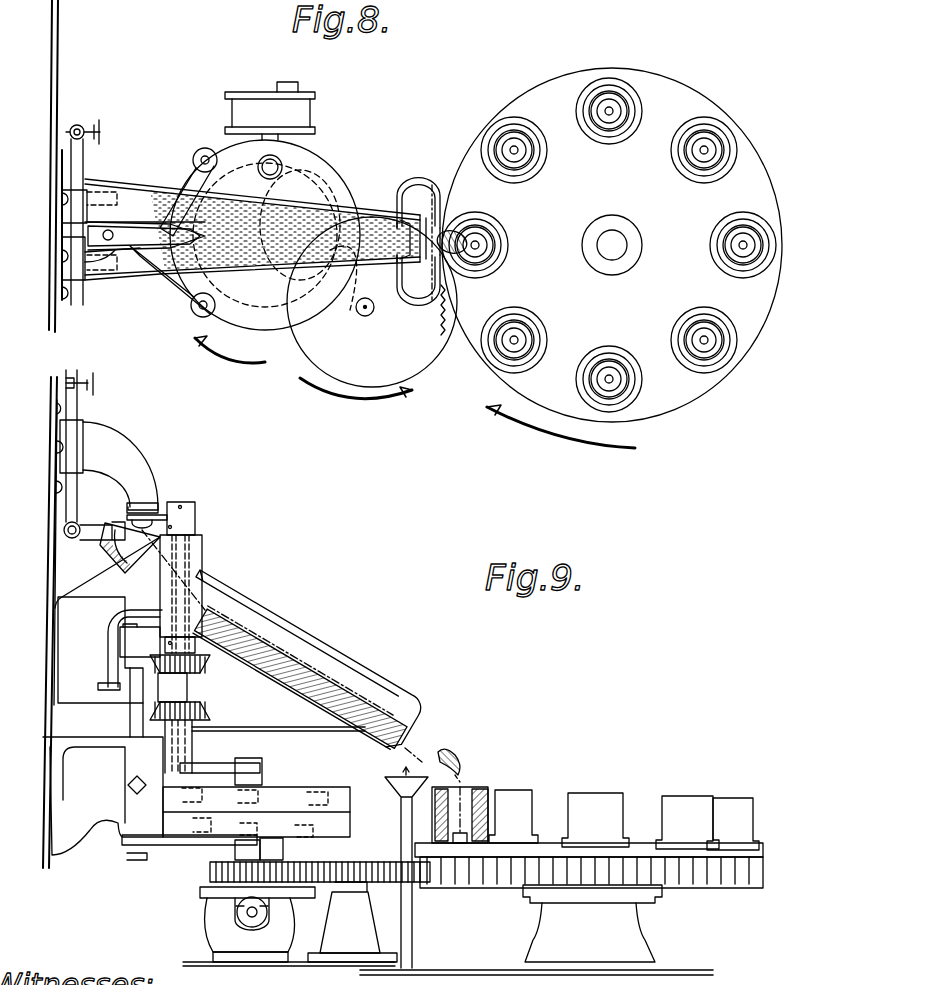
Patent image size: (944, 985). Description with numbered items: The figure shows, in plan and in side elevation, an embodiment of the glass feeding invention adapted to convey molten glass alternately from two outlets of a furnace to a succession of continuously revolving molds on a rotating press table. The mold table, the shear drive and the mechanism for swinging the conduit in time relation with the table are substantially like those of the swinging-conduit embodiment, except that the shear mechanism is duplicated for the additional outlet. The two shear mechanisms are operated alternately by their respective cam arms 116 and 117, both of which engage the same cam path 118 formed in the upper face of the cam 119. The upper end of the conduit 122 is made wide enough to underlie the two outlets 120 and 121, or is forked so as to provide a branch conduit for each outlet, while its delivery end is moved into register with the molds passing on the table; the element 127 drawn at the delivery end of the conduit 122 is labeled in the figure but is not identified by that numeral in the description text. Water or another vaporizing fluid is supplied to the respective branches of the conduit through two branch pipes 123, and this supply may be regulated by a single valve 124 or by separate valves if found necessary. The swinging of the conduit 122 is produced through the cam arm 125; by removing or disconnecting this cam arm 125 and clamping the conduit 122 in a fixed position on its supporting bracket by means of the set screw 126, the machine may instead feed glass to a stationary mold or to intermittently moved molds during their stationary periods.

In FIG. 8, the cam arm 116 is at (212, 148).
In FIG. 8, the cam arm 117 is at (205, 333).
In FIG. 9, the cam arm 117 is at (203, 765).
In FIG. 8, the cam path 118 is at (288, 173).
In FIG. 9, the cam path 118 is at (283, 802).
In FIG. 8, the cam 119 is at (343, 178).
In FIG. 9, the cam 119 is at (333, 828).
In FIG. 8, the outlet 120 is at (102, 182).
In FIG. 8, the outlet 121 is at (130, 267).
In FIG. 9, the outlet 121 is at (122, 453).
In FIG. 8, the conduit 122 is at (398, 257).
In FIG. 9, the conduit 122 is at (425, 712).
In FIG. 8, the branch pipes 123 is at (110, 262).
In FIG. 9, the branch pipes 123 is at (92, 527).
In FIG. 8, the valve 124 is at (100, 130).
In FIG. 9, the valve 124 is at (102, 382).
In FIG. 8, the cam arm 125 is at (160, 305).
In FIG. 9, the cam arm 125 is at (185, 845).
In FIG. 9, the set screw 126 is at (128, 790).
In FIG. 8, the feed channel 127 is at (397, 200).
In FIG. 9, the feed channel 127 is at (375, 700).